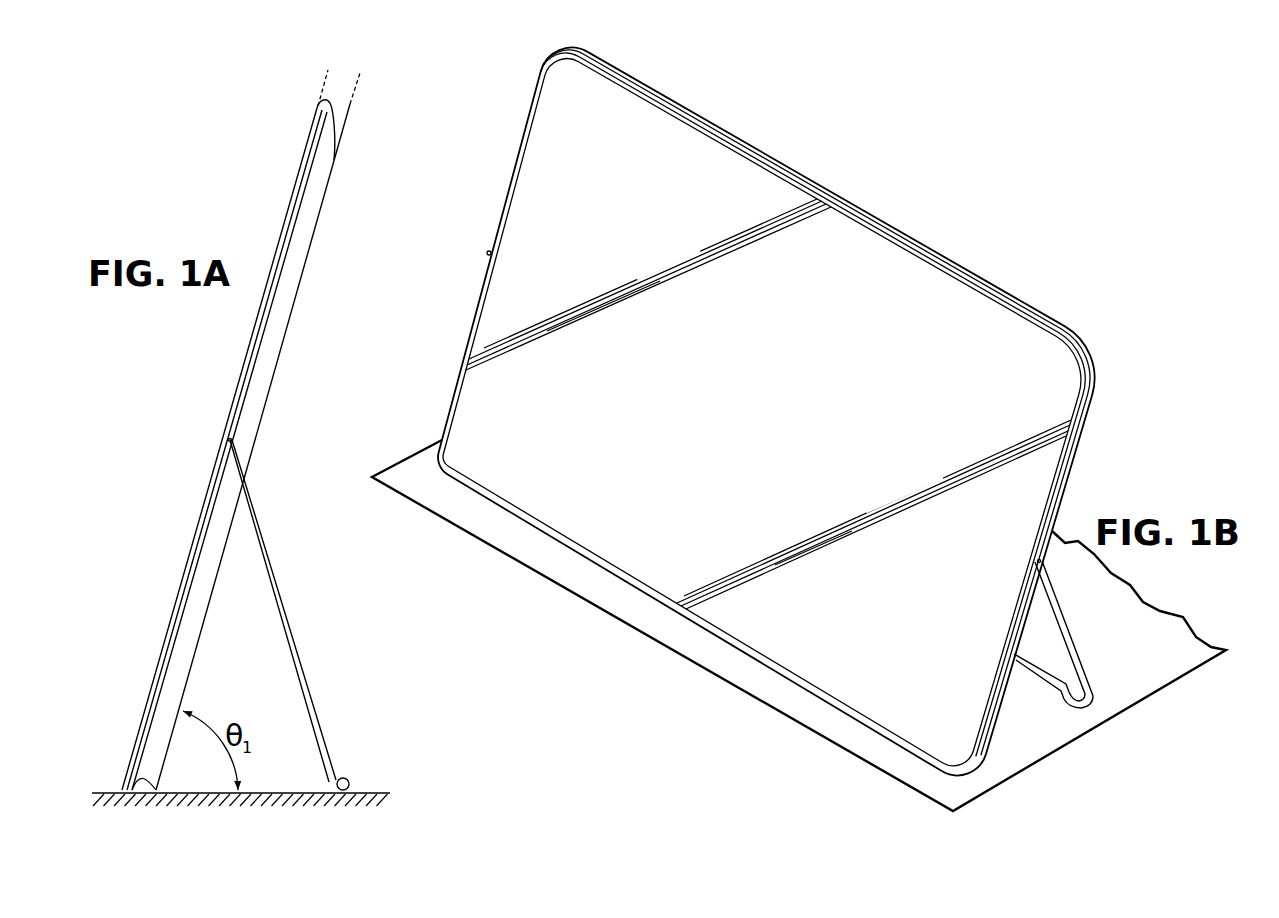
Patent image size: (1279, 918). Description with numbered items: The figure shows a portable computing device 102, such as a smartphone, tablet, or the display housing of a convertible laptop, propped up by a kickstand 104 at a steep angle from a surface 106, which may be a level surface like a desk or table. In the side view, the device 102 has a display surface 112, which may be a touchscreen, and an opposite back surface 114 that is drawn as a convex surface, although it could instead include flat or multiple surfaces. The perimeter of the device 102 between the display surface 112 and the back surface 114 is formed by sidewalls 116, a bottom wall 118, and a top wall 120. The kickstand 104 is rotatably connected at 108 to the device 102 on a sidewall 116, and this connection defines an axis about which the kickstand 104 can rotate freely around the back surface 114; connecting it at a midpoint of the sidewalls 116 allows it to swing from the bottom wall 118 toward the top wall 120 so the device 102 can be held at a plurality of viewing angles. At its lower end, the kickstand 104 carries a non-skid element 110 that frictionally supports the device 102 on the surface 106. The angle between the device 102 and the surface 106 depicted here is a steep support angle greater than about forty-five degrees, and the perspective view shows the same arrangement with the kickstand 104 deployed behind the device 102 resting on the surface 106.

In FIG. 1A, the portable computing device 102 is at (268, 424).
In FIG. 1B, the portable computing device 102 is at (777, 427).
In FIG. 1A, the kickstand 104 is at (304, 636).
In FIG. 1B, the kickstand 104 is at (1084, 645).
In FIG. 1A, the surface 106 is at (286, 792).
In FIG. 1B, the surface 106 is at (411, 466).
In FIG. 1A, the rotatable connection 108 is at (228, 441).
In FIG. 1B, the rotatable connection 108 is at (1037, 563).
In FIG. 1A, the non-skid element 110 is at (346, 777).
In FIG. 1A, the display surface 112 is at (318, 84).
In FIG. 1B, the display surface 112 is at (766, 419).
In FIG. 1A, the back surface 114 is at (346, 123).
In FIG. 1A, the sidewall 116 is at (278, 58).
In FIG. 1B, the sidewall 116 is at (481, 289).
In FIG. 1B, the bottom wall 118 is at (962, 778).
In FIG. 1B, the top wall 120 is at (848, 197).